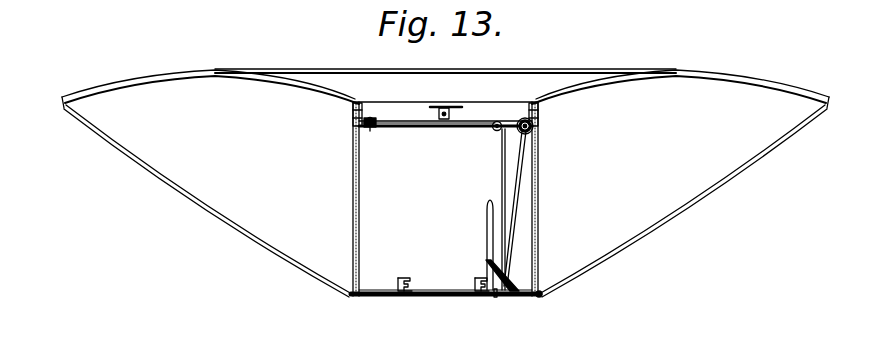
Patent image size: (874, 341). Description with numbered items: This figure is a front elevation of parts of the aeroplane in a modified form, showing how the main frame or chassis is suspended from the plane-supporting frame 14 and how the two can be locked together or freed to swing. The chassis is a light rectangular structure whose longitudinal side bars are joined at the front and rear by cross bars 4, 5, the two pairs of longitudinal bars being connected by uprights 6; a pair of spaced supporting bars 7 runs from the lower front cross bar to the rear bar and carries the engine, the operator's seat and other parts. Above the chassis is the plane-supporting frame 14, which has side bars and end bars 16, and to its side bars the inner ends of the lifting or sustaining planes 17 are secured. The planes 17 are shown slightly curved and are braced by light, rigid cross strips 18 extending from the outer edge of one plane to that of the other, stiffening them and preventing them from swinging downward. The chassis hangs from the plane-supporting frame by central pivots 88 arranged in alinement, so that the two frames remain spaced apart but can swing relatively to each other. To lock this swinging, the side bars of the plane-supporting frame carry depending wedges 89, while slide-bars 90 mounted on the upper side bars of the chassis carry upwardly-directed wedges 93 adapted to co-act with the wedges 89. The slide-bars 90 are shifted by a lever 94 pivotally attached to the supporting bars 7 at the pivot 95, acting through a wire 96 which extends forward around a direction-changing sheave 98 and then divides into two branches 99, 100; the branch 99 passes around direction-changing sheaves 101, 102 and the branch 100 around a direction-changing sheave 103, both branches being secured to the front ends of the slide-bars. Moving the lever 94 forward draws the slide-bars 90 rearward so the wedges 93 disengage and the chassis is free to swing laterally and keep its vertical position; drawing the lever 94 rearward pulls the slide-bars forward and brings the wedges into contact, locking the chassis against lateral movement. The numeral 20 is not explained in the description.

The front cross bar 4 is at (402, 129).
The rear cross bar 5 is at (373, 291).
The uprights 6 is at (353, 187).
The supporting bars 7 is at (478, 282).
The plane-supporting frame 14 is at (475, 104).
The end bars 16 is at (508, 103).
The lifting or sustaining planes 17 is at (203, 78).
The cross strips 18 is at (357, 70).
The wing lower edge braces 20 is at (281, 251).
The central pivots 88 is at (446, 108).
The depending wedges 89 is at (353, 113).
The slide-bars 90 is at (360, 126).
The upwardly-directed wedges 93 is at (353, 119).
The lever 94 is at (487, 215).
The lever pivot 95 is at (495, 294).
The wire 96 is at (503, 272).
The direction-changing sheave 98 is at (541, 295).
The wire branch 99 is at (502, 170).
The wire branch 100 is at (515, 208).
The direction-changing sheave 101 is at (495, 132).
The direction-changing sheave 102 is at (372, 132).
The direction-changing sheave 103 is at (533, 130).